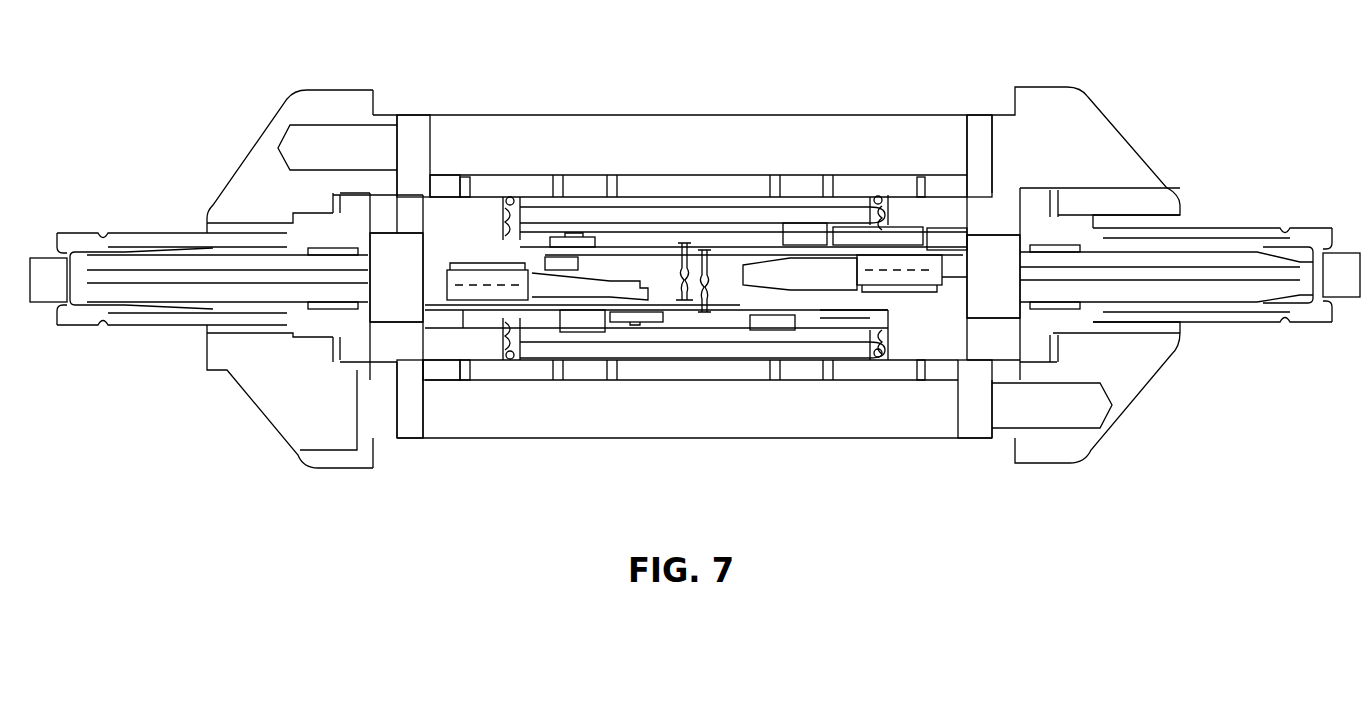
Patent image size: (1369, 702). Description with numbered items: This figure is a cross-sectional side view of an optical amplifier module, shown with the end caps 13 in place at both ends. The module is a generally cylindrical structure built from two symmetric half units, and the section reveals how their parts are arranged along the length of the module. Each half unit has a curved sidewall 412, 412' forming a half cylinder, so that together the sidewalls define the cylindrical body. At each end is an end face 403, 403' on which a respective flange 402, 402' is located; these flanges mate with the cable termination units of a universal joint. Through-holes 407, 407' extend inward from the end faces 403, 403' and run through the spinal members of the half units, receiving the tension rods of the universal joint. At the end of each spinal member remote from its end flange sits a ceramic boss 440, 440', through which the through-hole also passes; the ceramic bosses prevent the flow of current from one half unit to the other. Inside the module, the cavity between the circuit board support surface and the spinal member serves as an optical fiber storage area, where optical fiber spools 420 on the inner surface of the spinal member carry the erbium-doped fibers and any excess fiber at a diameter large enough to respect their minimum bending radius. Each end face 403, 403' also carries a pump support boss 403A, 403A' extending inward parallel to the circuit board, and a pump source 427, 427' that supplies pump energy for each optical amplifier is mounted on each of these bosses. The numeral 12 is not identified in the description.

The shaft 12 is at (137, 240).
The end cap 13 is at (238, 358).
The flange 402 is at (427, 263).
The flange 402' is at (963, 292).
The end face 403 is at (400, 434).
The end face 403' is at (971, 132).
The pump support boss 403A is at (692, 333).
The pump support boss 403A' is at (887, 145).
The through-hole 407 is at (684, 288).
The through-hole 407' is at (682, 121).
The curved sidewall 412 is at (451, 424).
The curved sidewall 412' is at (470, 132).
The optical fiber spool 420 is at (703, 220).
The pump source 427 is at (511, 184).
The pump source 427' is at (902, 372).
The ceramic boss 440 is at (970, 418).
The ceramic boss 440' is at (409, 132).